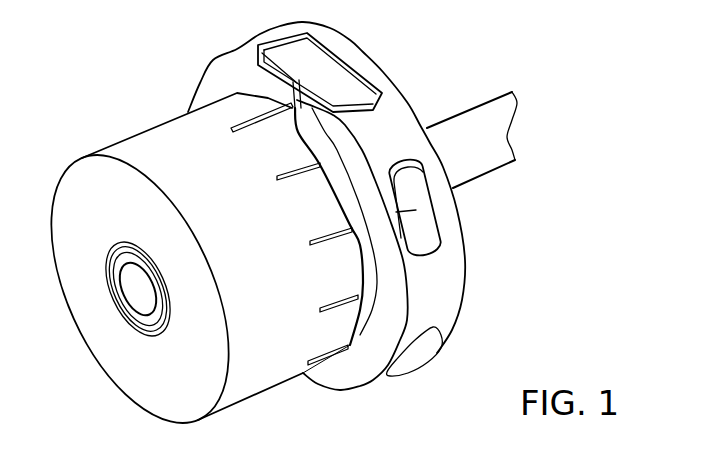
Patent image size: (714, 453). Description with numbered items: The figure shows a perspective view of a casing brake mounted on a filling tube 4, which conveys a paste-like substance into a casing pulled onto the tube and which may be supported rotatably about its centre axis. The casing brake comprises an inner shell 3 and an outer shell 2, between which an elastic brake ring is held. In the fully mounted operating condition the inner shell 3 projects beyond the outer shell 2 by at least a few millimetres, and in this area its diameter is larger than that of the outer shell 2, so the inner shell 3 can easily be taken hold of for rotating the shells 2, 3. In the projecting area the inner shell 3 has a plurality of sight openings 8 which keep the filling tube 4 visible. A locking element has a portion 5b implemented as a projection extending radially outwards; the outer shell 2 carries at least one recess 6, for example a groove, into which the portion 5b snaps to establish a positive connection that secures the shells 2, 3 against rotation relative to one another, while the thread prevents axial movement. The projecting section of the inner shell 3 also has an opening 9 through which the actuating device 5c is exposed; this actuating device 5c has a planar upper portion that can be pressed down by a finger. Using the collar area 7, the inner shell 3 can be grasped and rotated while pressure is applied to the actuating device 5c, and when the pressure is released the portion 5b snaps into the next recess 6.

The outer shell 2 is at (110, 151).
The inner shell 3 is at (458, 263).
The filling tube 4 is at (480, 103).
The portion of the locking element 5b is at (262, 130).
The actuating device 5c is at (318, 60).
The recess 6 is at (278, 178).
The collar area 7 is at (410, 122).
The sight opening 8 is at (415, 233).
The opening 9 is at (263, 73).